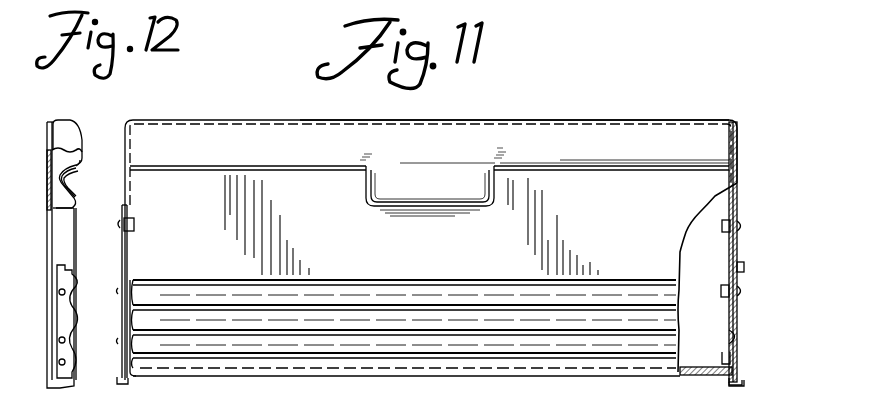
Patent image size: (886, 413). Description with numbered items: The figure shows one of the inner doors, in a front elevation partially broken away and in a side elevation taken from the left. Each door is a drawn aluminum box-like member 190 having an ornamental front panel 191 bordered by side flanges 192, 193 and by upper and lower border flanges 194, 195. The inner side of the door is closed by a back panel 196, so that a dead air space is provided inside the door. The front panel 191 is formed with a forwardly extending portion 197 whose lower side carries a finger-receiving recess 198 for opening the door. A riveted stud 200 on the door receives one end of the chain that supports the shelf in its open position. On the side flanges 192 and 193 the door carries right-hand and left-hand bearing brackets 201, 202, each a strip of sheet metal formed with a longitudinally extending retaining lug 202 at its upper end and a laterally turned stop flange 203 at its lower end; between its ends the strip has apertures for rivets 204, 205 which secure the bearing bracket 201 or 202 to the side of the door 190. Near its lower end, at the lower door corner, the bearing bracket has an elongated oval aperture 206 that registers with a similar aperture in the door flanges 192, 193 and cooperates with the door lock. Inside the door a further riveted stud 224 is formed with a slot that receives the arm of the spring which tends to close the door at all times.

In FIG. 12, the box-like member 190 is at (61, 298).
In FIG. 11, the box-like member 190 is at (445, 246).
In FIG. 11, the front panel 191 is at (690, 192).
In FIG. 11, the side flange 192 is at (742, 238).
In FIG. 12, the side flange 193 is at (50, 251).
In FIG. 11, the side flange 193 is at (110, 250).
In FIG. 12, the upper border flange 194 is at (67, 164).
In FIG. 11, the upper border flange 194 is at (650, 112).
In FIG. 11, the lower border flange 195 is at (707, 376).
In FIG. 11, the back panel 196 is at (690, 280).
In FIG. 11, the forwardly extending portion 197 is at (432, 157).
In FIG. 11, the finger-receiving recess 198 is at (452, 184).
In FIG. 11, the riveted stud 200 is at (722, 226).
In FIG. 12, the right-hand bearing bracket 201 is at (58, 320).
In FIG. 11, the right-hand bearing bracket 201 is at (740, 308).
In FIG. 11, the left-hand bearing bracket 202 is at (110, 272).
In FIG. 11, the stop flange 203 is at (746, 384).
In FIG. 11, the rivet 204 is at (746, 274).
In FIG. 11, the rivet 205 is at (742, 332).
In FIG. 11, the elongated oval aperture 206 is at (722, 360).
In FIG. 11, the riveted stud 224 is at (720, 290).